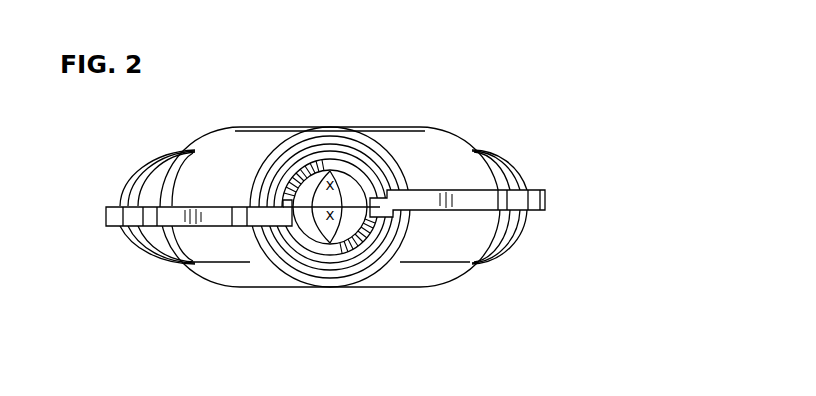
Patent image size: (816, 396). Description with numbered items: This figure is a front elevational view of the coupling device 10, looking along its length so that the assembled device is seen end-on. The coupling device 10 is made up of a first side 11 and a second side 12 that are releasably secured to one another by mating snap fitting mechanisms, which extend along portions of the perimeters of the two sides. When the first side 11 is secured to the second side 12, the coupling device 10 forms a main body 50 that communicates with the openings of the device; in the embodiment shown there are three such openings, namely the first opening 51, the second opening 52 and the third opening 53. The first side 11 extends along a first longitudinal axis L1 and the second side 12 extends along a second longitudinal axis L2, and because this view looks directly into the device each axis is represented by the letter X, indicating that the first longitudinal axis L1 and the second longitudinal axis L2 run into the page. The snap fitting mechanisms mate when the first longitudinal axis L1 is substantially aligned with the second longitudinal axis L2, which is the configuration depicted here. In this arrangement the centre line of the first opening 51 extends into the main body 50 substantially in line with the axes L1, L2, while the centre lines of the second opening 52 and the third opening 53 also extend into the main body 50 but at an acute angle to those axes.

The coupling device 10 is at (650, 91).
The first side 11 is at (418, 72).
The second side 12 is at (497, 324).
The main body 50 is at (287, 229).
The first opening 51 is at (355, 241).
The second opening 52 is at (541, 229).
The third opening 53 is at (123, 244).
The first longitudinal axis L1 is at (334, 159).
The second longitudinal axis L2 is at (329, 254).